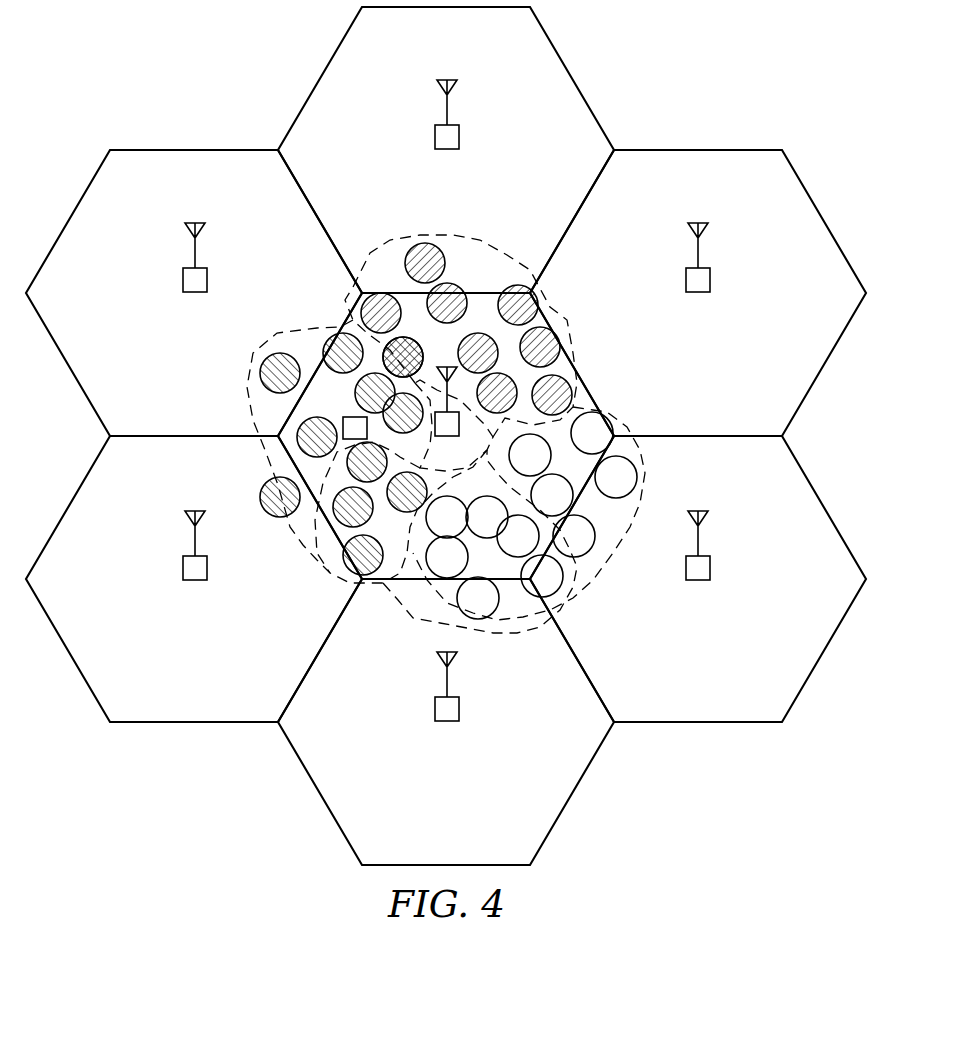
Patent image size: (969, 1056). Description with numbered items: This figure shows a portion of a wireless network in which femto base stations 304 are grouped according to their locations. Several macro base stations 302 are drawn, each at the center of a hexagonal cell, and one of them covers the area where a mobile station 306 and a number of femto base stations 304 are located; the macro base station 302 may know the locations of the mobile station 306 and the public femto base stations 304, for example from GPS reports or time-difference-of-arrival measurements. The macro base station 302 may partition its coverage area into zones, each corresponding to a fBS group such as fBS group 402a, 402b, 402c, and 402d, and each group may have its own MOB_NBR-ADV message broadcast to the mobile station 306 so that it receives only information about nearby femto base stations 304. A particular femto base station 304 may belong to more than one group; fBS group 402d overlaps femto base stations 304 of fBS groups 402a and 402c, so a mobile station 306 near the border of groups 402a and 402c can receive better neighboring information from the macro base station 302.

The macro base station 302 is at (710, 280).
The femto base station 304 is at (343, 472).
The mobile station 306 is at (343, 427).
The fBS group 402a is at (292, 330).
The fBS group 402b is at (404, 238).
The fBS group 402c is at (645, 470).
The fBS group 402d is at (405, 628).